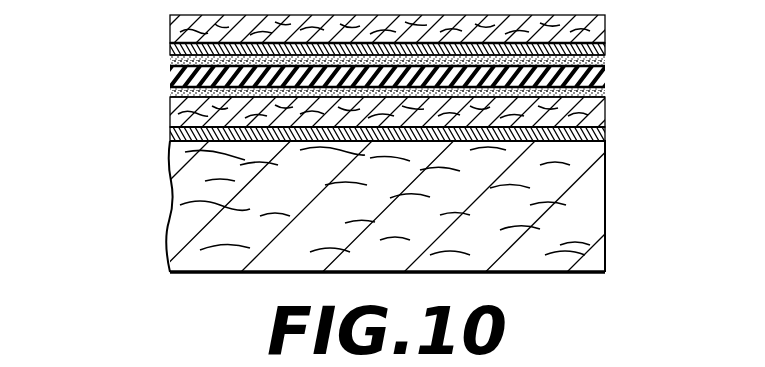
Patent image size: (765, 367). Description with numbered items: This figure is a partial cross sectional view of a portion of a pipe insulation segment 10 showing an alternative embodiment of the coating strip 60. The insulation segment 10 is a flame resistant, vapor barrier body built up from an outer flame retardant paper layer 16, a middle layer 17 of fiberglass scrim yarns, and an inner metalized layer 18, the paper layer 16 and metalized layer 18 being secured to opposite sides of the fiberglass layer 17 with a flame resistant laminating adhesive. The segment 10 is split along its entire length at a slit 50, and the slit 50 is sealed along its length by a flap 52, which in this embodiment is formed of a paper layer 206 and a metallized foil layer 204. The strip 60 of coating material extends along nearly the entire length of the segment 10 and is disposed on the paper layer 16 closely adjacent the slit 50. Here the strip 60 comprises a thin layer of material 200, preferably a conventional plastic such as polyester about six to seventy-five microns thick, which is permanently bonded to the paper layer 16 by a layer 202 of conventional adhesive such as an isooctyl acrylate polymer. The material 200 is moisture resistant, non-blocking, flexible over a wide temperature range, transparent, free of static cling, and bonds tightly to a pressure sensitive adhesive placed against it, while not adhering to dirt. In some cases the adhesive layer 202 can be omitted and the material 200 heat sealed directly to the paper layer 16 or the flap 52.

The insulation segment 10 is at (104, 252).
The paper layer 16 is at (606, 112).
The fiberglass layer 17 is at (606, 197).
The metalized layer 18 is at (606, 135).
The slit 50 is at (170, 195).
The flap 52 is at (610, 15).
The strip 60 is at (610, 65).
The material 200 is at (170, 80).
The adhesive layer 202 is at (170, 93).
The metallized foil layer 204 is at (170, 50).
The paper layer 206 is at (170, 25).